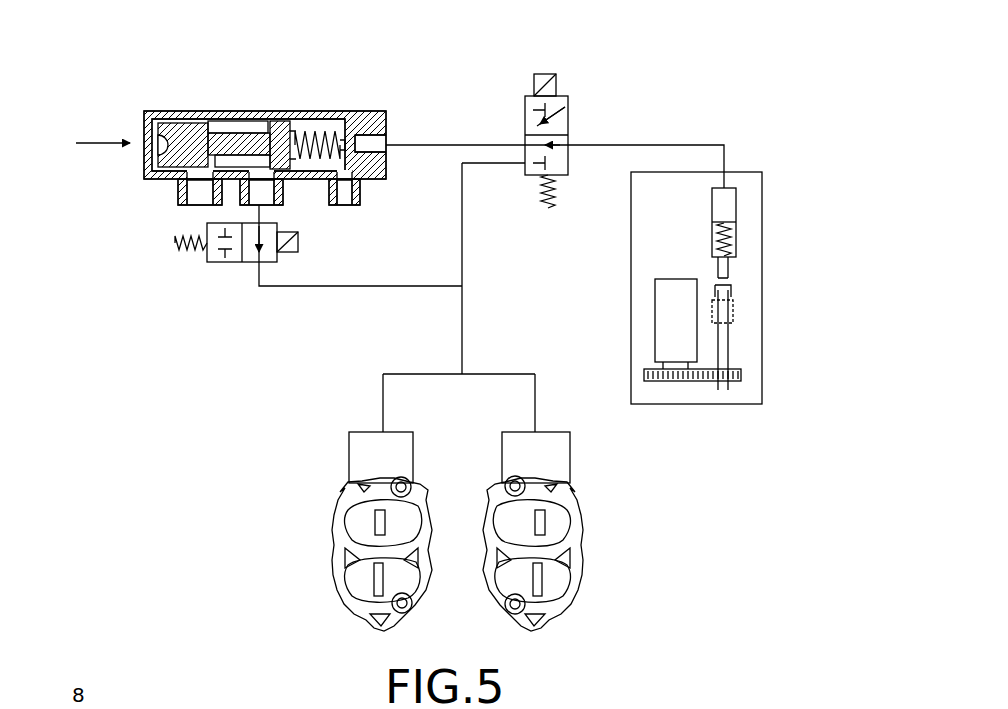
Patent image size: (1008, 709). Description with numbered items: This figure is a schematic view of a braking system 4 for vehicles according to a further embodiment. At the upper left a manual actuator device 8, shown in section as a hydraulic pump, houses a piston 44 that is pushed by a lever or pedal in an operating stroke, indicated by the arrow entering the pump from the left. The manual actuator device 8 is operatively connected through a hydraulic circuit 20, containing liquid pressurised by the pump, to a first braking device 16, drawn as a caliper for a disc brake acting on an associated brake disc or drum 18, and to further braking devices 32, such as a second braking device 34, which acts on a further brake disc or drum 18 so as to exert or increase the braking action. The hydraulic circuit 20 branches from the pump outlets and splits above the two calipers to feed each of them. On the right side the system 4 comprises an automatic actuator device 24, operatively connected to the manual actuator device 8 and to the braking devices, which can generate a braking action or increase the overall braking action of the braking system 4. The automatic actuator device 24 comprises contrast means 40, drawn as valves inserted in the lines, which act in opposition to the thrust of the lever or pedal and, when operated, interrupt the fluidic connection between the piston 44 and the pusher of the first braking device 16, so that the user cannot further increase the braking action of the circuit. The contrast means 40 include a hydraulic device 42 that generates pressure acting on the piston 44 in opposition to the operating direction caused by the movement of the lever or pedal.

The braking system 4 is at (684, 122).
The manual actuator device 8 is at (168, 90).
The first braking device 16 is at (335, 582).
The brake disc or drum 18 is at (380, 592).
The hydraulic circuit 20 is at (382, 325).
The automatic actuator device 24 is at (780, 314).
The further braking devices 32 is at (610, 531).
The second braking device 34 is at (578, 588).
The contrast means 40 is at (160, 285).
The hydraulic device 42 is at (736, 204).
The piston 44 is at (160, 160).